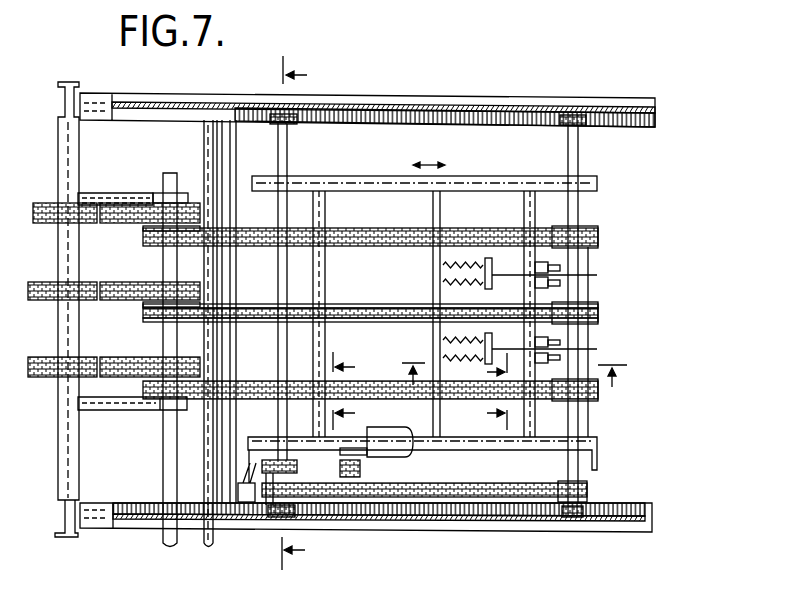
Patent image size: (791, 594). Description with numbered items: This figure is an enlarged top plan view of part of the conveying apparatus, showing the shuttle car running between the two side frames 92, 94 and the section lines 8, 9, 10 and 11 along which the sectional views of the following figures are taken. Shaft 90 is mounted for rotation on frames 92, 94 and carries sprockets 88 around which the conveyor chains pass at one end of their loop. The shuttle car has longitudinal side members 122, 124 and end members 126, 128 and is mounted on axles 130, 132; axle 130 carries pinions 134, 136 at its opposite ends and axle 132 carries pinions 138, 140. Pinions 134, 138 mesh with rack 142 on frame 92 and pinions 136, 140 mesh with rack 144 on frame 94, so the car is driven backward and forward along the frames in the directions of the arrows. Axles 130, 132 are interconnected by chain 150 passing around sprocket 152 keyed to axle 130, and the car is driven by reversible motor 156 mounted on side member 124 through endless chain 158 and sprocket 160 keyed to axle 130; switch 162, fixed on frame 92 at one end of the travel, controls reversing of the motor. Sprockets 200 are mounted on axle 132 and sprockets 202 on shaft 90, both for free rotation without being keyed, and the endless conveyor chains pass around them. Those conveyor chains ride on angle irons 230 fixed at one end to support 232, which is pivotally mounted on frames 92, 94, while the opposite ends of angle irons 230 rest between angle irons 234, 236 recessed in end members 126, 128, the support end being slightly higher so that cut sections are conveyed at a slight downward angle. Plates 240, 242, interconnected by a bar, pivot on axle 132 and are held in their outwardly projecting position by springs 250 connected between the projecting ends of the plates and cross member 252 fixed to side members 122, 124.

The section line 8- 8 is at (294, 313).
The section line 9- 9 is at (344, 390).
The section line 10- 10 is at (500, 392).
The section line 11- 11 is at (514, 365).
The sprockets 88 is at (152, 204).
The shaft 90 is at (164, 536).
The frame 92 is at (510, 528).
The frame 94 is at (497, 99).
The longitudinal side member 122 is at (497, 182).
The longitudinal side member 124 is at (470, 447).
The end member 126 is at (326, 208).
The end member 128 is at (529, 195).
The axle 130 is at (288, 151).
The axle 132 is at (579, 155).
The pinion 134 is at (297, 516).
The pinion 136 is at (297, 109).
The pinion 138 is at (578, 518).
The pinion 140 is at (571, 114).
The rack 142 is at (637, 505).
The rack 144 is at (648, 126).
The chain 150 is at (437, 497).
The sprocket 152 is at (267, 512).
The motor 156 is at (403, 426).
The endless chain 158 is at (270, 460).
The sprocket 160 is at (362, 471).
The switch 162 is at (247, 500).
The sprockets 200 is at (598, 233).
The sprockets 202 is at (200, 228).
The angle irons 230 is at (355, 305).
The support 232 is at (228, 140).
The angle iron 234 is at (391, 323).
The angle iron 236 is at (382, 303).
The plate 240 is at (597, 352).
The plate 242 is at (597, 279).
The springs 250 is at (473, 262).
The cross member 252 is at (432, 280).